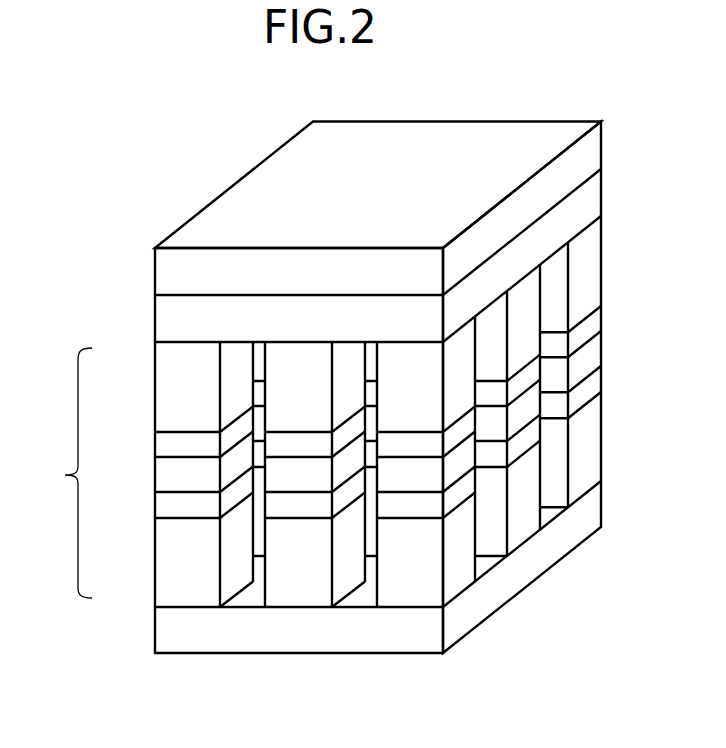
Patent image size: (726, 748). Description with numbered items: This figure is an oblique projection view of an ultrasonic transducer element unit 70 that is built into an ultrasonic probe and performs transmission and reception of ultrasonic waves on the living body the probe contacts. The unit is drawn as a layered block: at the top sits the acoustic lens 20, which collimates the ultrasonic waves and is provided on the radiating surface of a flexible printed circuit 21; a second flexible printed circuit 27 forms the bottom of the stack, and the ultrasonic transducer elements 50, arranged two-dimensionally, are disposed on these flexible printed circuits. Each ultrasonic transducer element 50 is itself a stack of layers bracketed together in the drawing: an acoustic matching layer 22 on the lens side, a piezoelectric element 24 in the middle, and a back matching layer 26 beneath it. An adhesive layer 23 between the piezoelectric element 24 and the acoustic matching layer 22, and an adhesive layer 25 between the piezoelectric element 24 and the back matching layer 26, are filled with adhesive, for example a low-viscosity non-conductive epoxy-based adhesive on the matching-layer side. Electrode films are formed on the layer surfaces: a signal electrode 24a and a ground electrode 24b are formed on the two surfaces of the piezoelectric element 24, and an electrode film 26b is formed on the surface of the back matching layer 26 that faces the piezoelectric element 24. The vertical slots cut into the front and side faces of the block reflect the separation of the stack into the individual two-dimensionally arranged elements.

The ultrasonic transducer element unit 70 is at (564, 82).
The acoustic lens 20 is at (165, 279).
The flexible printed circuit 21 is at (165, 327).
The acoustic matching layer 22 is at (165, 390).
The adhesive layer 23 is at (165, 446).
The piezoelectric element 24 is at (165, 482).
The adhesive layer 25 is at (162, 506).
The back matching layer 26 is at (165, 562).
The flexible printed circuit 27 is at (165, 630).
The ultrasonic transducer element 50 is at (63, 473).
The signal electrode 24a is at (193, 457).
The ground electrode 24b is at (203, 494).
The electrode film 26b is at (188, 518).